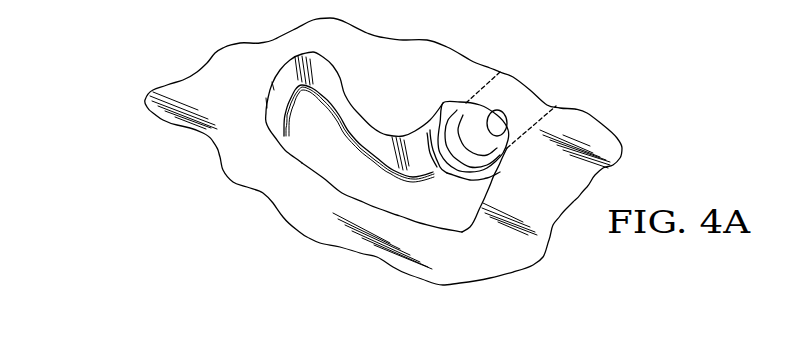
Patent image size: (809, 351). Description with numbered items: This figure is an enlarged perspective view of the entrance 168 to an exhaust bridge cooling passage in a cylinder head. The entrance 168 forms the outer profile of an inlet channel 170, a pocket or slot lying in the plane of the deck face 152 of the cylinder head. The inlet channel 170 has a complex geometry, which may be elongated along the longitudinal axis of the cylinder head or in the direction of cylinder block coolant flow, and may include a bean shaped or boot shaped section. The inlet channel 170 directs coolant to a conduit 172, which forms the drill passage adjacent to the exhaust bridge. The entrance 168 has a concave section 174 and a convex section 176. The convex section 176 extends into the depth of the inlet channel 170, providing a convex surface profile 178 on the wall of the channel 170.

The deck face 152 is at (457, 83).
The entrance 168 is at (302, 163).
The inlet channel 170 is at (338, 198).
The conduit 172 is at (507, 133).
The concave section 174 is at (461, 243).
The convex section 176 is at (378, 112).
The convex surface profile 178 is at (393, 155).